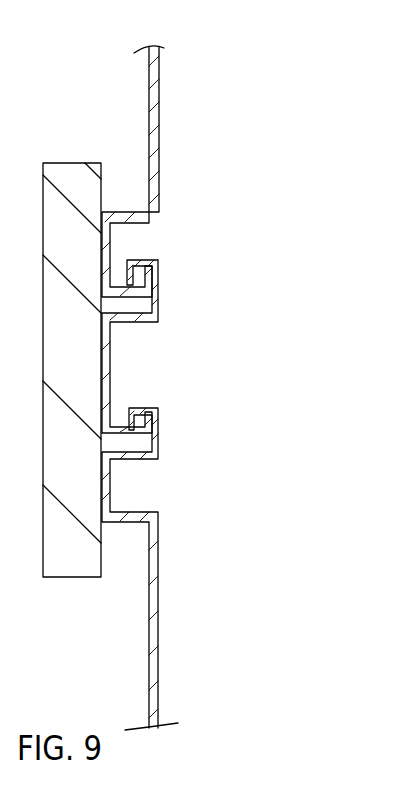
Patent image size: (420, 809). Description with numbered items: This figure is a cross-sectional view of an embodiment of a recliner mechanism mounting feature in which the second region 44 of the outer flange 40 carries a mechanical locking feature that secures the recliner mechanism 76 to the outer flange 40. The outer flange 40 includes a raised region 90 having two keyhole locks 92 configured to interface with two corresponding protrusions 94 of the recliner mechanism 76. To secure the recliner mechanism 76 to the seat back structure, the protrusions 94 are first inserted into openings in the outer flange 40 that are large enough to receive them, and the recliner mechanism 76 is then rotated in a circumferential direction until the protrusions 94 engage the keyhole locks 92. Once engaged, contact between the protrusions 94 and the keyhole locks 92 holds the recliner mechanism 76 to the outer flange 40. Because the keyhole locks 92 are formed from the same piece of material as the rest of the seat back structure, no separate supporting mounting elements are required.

The outer flange 40 is at (200, 112).
The recliner mechanism 76 is at (62, 160).
The second region 44 is at (160, 164).
The keyhole lock 92 is at (160, 295).
The protrusion 94 is at (154, 260).
The raised region 90 is at (110, 484).